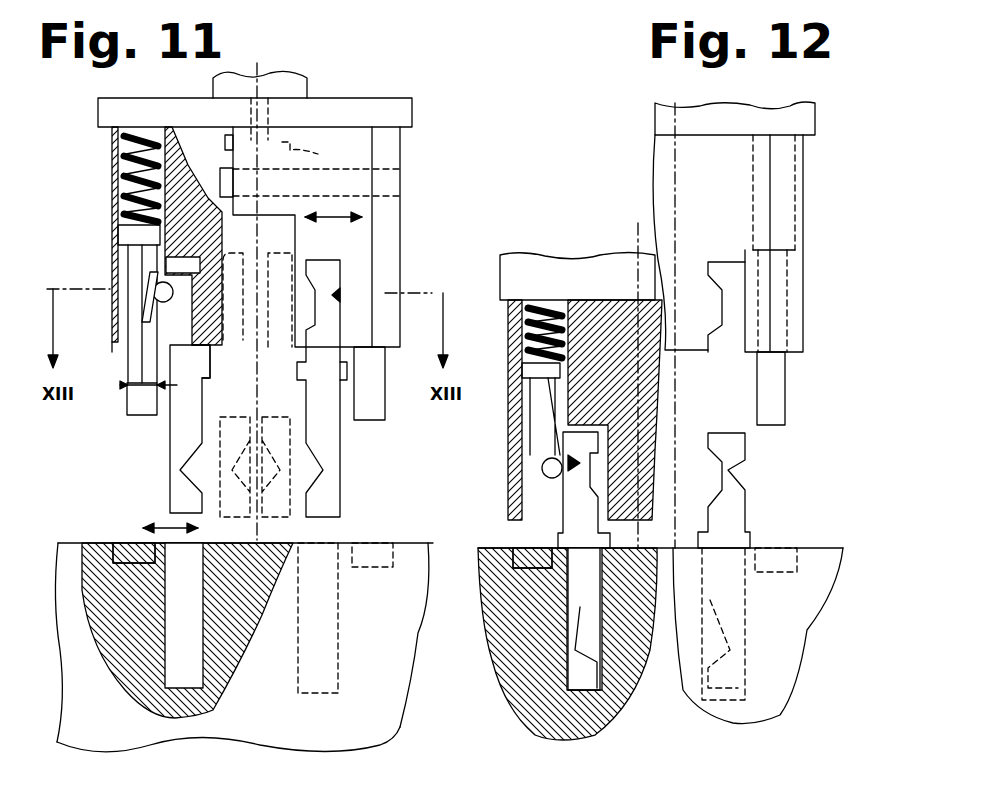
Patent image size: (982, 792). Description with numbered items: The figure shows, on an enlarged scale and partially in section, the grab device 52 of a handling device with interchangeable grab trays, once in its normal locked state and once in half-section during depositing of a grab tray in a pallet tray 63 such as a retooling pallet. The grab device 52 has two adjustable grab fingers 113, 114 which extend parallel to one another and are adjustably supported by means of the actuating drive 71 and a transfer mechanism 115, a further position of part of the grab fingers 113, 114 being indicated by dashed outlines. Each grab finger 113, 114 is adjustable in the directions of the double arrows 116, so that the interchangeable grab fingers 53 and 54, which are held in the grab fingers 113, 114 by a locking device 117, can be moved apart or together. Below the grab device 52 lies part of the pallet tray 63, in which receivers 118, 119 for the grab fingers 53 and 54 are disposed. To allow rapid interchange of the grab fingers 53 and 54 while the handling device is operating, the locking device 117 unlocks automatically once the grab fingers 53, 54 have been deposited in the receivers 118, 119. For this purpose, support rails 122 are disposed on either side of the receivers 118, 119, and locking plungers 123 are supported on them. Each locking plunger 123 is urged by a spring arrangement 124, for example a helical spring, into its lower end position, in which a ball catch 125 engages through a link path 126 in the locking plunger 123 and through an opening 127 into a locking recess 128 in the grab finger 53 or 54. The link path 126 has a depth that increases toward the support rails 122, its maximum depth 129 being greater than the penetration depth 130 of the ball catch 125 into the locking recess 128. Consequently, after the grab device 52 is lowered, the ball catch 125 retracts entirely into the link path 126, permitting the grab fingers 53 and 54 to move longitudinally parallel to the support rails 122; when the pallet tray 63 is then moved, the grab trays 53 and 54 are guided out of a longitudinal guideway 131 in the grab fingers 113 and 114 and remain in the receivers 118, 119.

In FIG. 11, the grab device 52 is at (440, 106).
In FIG. 11, the grab finger 53 is at (173, 462).
In FIG. 12, the grab finger 53 is at (615, 690).
In FIG. 11, the grab finger 54 is at (330, 453).
In FIG. 12, the grab finger 54 is at (738, 506).
In FIG. 11, the pallet tray 63 is at (380, 708).
In FIG. 12, the pallet tray 63 is at (512, 643).
In FIG. 11, the actuating drive 71 is at (295, 88).
In FIG. 11, the grab finger 113 is at (385, 155).
In FIG. 12, the grab finger 113 is at (734, 227).
In FIG. 11, the grab finger 114 is at (112, 177).
In FIG. 12, the grab finger 114 is at (545, 333).
In FIG. 11, the transfer mechanism 115 is at (320, 154).
In FIG. 11, the double arrows 116 is at (333, 232).
In FIG. 11, the locking device 117 is at (108, 412).
In FIG. 11, the receiver 118 is at (199, 650).
In FIG. 12, the receiver 118 is at (568, 672).
In FIG. 11, the receiver 119 is at (322, 607).
In FIG. 12, the receiver 119 is at (744, 669).
In FIG. 11, the support rail 122 is at (118, 542).
In FIG. 12, the support rail 122 is at (515, 545).
In FIG. 11, the locking plunger 123 is at (387, 420).
In FIG. 12, the locking plunger 123 is at (522, 370).
In FIG. 11, the spring arrangement 124 is at (112, 133).
In FIG. 12, the spring arrangement 124 is at (547, 300).
In FIG. 11, the ball catch 125 is at (154, 284).
In FIG. 12, the ball catch 125 is at (542, 467).
In FIG. 11, the link path 126 is at (145, 328).
In FIG. 12, the link path 126 is at (545, 445).
In FIG. 11, the opening 127 is at (220, 258).
In FIG. 11, the locking recess 128 is at (188, 322).
In FIG. 11, the maximum depth 129 is at (137, 416).
In FIG. 11, the penetration depth 130 is at (203, 374).
In FIG. 12, the longitudinal guideway 131 is at (597, 472).